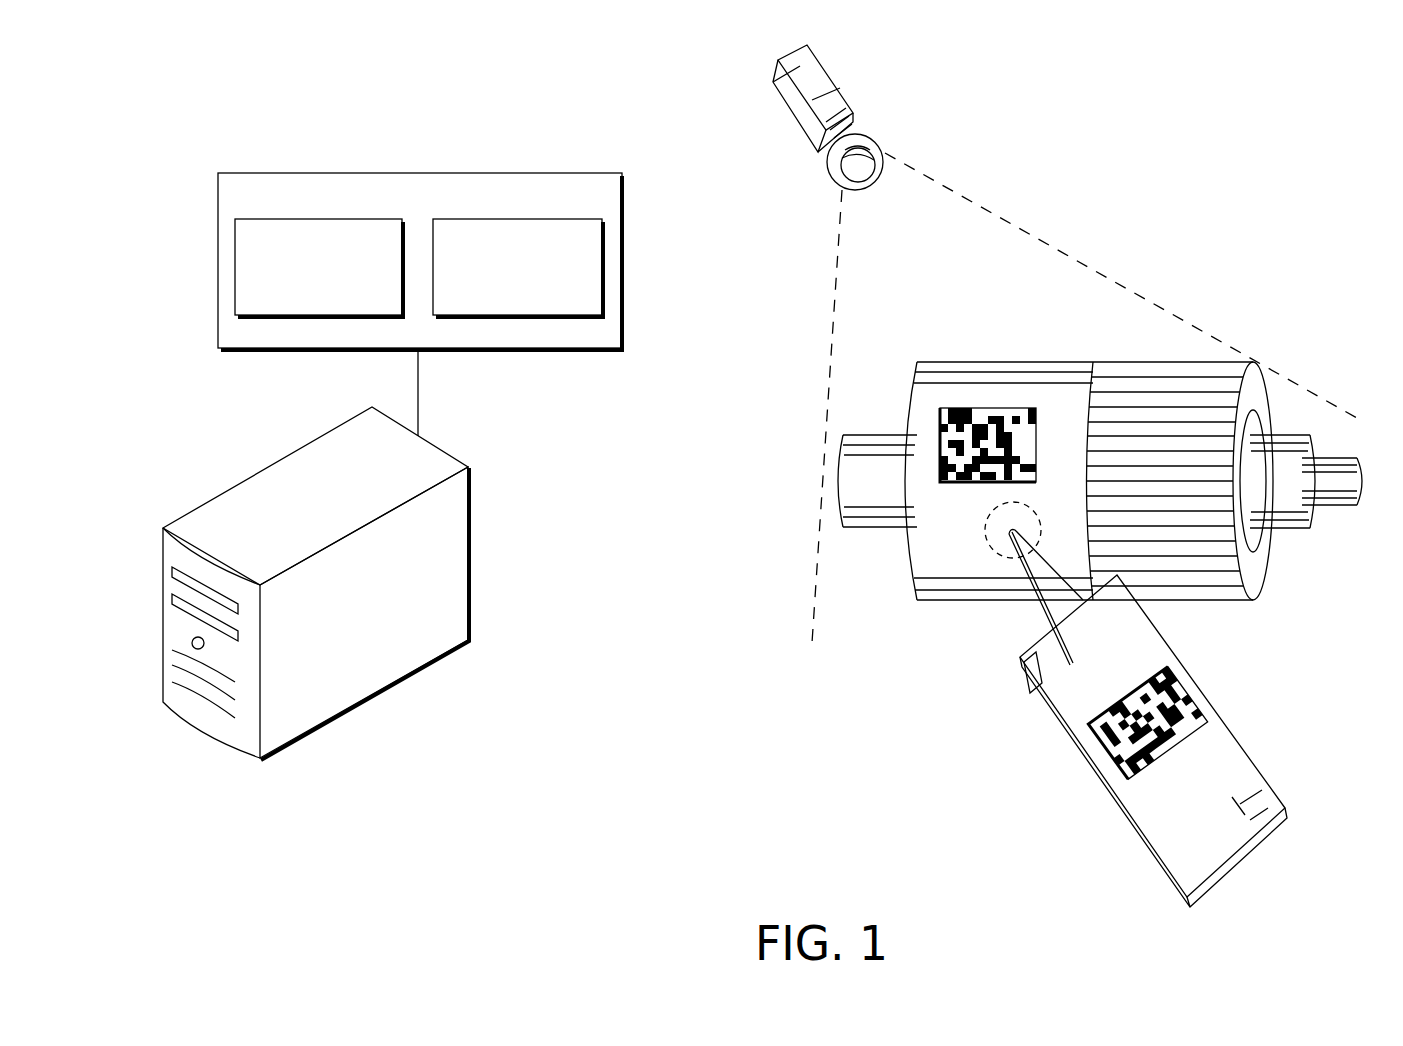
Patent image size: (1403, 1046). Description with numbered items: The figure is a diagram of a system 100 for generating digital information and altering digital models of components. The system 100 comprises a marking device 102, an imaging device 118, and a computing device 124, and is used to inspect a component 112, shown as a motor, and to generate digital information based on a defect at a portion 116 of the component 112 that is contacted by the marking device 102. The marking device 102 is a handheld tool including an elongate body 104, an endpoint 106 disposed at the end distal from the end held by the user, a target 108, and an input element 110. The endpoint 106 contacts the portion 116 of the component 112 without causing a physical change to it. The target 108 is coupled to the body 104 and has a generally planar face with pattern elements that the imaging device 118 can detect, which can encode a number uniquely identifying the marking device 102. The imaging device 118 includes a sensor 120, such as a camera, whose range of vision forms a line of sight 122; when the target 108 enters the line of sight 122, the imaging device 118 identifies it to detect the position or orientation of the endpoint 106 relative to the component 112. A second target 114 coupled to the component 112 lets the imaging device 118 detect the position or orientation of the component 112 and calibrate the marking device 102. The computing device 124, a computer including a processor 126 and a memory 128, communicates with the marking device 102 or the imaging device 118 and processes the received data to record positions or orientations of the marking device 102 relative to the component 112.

The system 100 is at (198, 134).
The marking device 102 is at (1152, 872).
The body 104 is at (1243, 773).
The endpoint 106 is at (1033, 598).
The target 108 is at (1173, 663).
The input element 110 is at (1022, 672).
The component 112 is at (1072, 362).
The target 114 is at (1015, 410).
The portion 116 is at (1012, 500).
The imaging device 118 is at (832, 68).
The sensor 120 is at (866, 185).
The line of sight 122 is at (1068, 257).
The computing device 124 is at (448, 452).
The processor 126 is at (353, 218).
The memory 128 is at (548, 218).